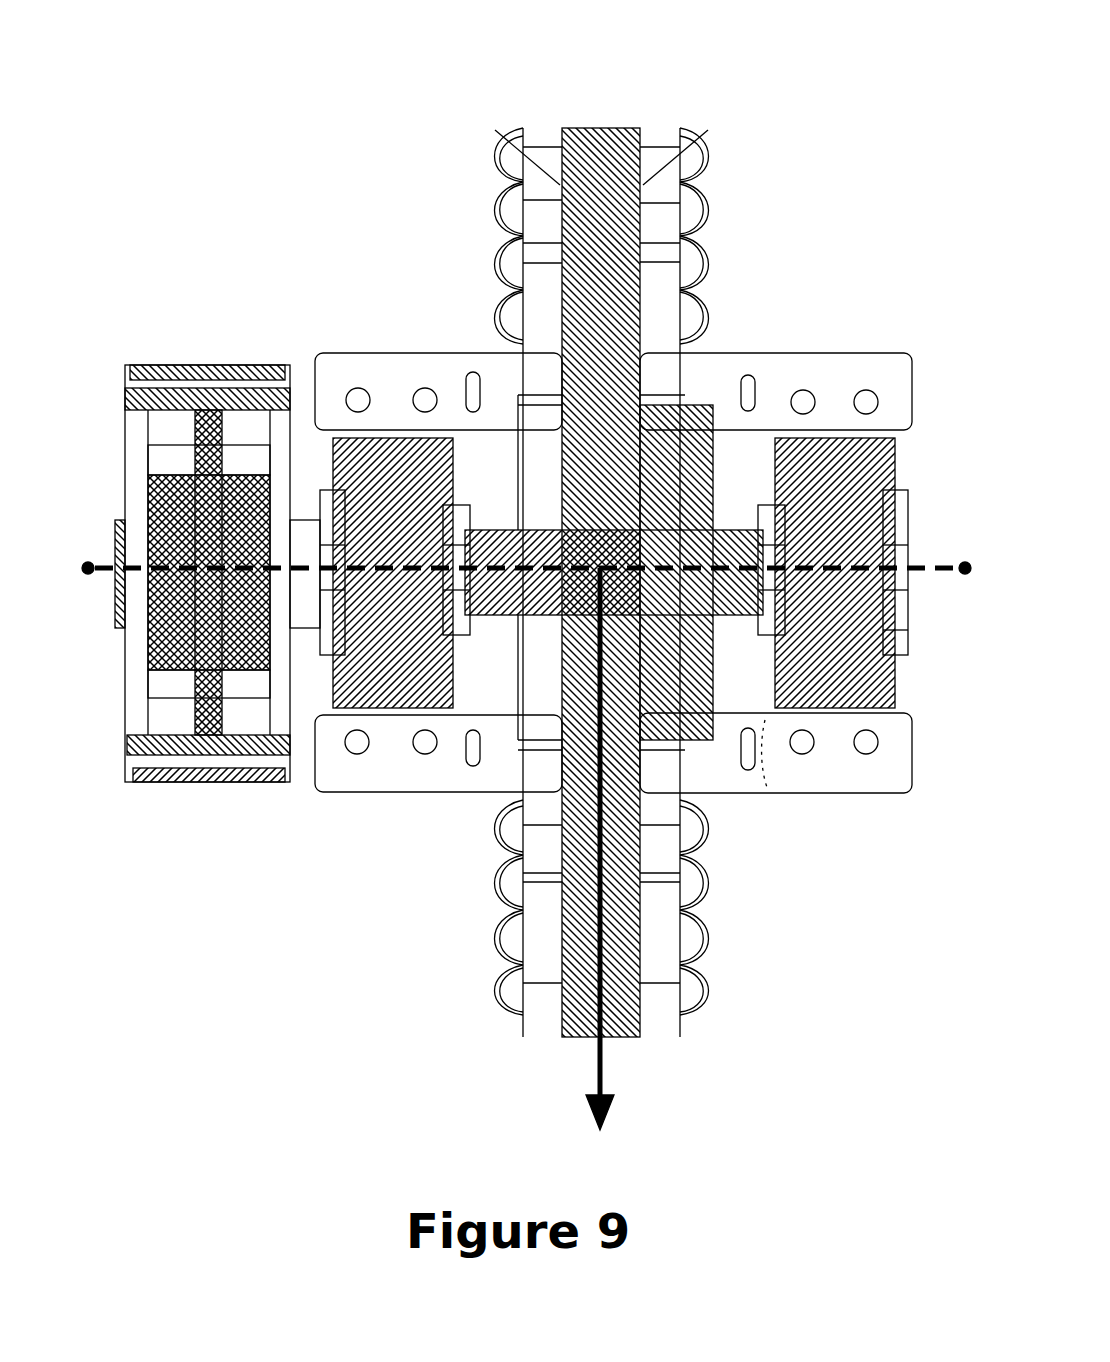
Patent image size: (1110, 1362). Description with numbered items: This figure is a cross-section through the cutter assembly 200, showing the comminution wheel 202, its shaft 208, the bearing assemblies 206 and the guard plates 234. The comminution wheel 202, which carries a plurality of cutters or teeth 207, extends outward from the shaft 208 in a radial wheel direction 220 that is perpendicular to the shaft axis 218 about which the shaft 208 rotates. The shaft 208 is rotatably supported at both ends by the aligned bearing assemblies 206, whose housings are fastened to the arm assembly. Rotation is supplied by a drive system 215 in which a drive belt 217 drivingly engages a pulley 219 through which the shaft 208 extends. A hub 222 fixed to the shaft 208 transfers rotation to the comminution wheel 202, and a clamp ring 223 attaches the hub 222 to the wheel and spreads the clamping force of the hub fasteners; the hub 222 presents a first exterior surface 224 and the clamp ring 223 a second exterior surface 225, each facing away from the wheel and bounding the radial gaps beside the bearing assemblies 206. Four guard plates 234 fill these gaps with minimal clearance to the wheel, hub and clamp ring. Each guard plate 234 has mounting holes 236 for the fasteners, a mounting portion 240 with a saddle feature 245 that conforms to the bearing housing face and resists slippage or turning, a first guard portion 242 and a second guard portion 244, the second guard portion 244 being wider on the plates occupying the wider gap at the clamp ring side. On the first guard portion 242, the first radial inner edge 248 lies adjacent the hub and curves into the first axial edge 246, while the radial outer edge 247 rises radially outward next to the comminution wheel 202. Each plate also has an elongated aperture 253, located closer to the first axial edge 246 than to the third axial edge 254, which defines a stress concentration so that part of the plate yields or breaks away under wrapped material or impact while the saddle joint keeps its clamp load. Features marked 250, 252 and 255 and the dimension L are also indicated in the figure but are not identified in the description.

The cutter assembly 200 is at (870, 117).
The comminution wheel 202 is at (600, 162).
The bearing assemblies 206 is at (316, 722).
The cutters or teeth 207 is at (523, 173).
The shaft 208 is at (517, 555).
The drive system 215 is at (105, 504).
The drive belt 217 is at (193, 770).
The shaft axis 218 is at (907, 568).
The pulley 219 is at (140, 708).
The radial wheel direction 220 is at (605, 1066).
The hub 222 is at (690, 723).
The clamp ring 223 is at (543, 700).
The first exterior surface 224 is at (881, 631).
The second exterior surface 225 is at (509, 694).
The guard plates 234 is at (390, 384).
The mounting holes 236 is at (356, 748).
The mounting portion 240 is at (805, 772).
The first guard portion 242 is at (683, 780).
The second guard portion 244 is at (329, 687).
The saddle feature 245 is at (507, 464).
The first axial edge 246 is at (562, 370).
The radial outer edge 247 is at (726, 339).
The first radial inner edge 248 is at (694, 400).
The hub 250 is at (480, 622).
The block top edge 252 is at (893, 450).
The aperture 253 is at (737, 374).
The third axial edge 254 is at (503, 681).
The motor rotor 255 is at (478, 455).
The length dimension L is at (757, 697).